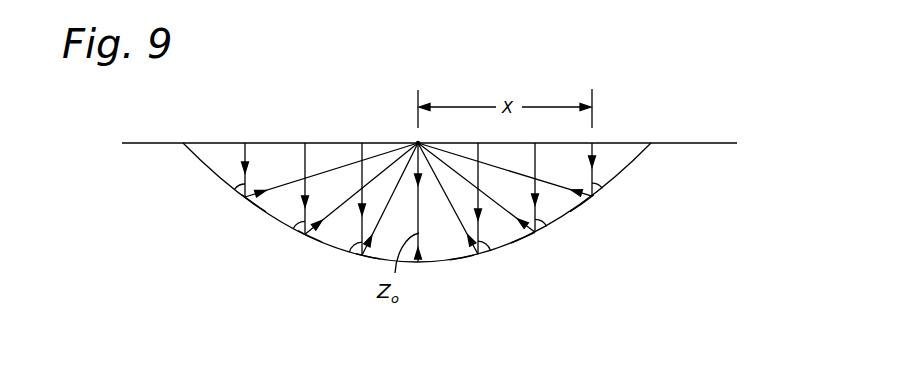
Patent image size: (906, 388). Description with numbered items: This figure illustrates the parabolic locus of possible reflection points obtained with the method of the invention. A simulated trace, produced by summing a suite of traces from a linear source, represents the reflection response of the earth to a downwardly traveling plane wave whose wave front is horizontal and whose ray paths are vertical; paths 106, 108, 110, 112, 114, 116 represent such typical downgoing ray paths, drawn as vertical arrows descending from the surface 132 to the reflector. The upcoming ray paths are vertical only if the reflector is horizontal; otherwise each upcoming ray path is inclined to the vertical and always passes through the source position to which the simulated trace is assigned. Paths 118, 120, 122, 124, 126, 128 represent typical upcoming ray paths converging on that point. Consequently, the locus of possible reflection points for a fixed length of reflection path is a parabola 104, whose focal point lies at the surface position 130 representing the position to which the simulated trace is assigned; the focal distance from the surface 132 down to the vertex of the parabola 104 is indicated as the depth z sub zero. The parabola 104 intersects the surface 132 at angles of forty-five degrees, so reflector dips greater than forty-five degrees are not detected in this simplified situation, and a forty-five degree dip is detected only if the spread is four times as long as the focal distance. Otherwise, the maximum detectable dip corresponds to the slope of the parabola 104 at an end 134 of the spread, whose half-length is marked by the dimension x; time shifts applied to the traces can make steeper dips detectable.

The parabola 104 is at (438, 263).
The downgoing ray path 106 is at (604, 182).
The downgoing ray path 108 is at (548, 230).
The downgoing ray path 110 is at (488, 249).
The downgoing ray path 112 is at (356, 250).
The downgoing ray path 114 is at (296, 224).
The downgoing ray path 116 is at (236, 189).
The upcoming ray path 118 is at (254, 204).
The upcoming ray path 120 is at (310, 238).
The upcoming ray path 122 is at (368, 259).
The upcoming ray path 124 is at (462, 258).
The upcoming ray path 126 is at (523, 239).
The upcoming ray path 128 is at (582, 204).
The surface position 130 is at (418, 143).
The surface 132 is at (718, 142).
The end of the spread 134 is at (245, 143).